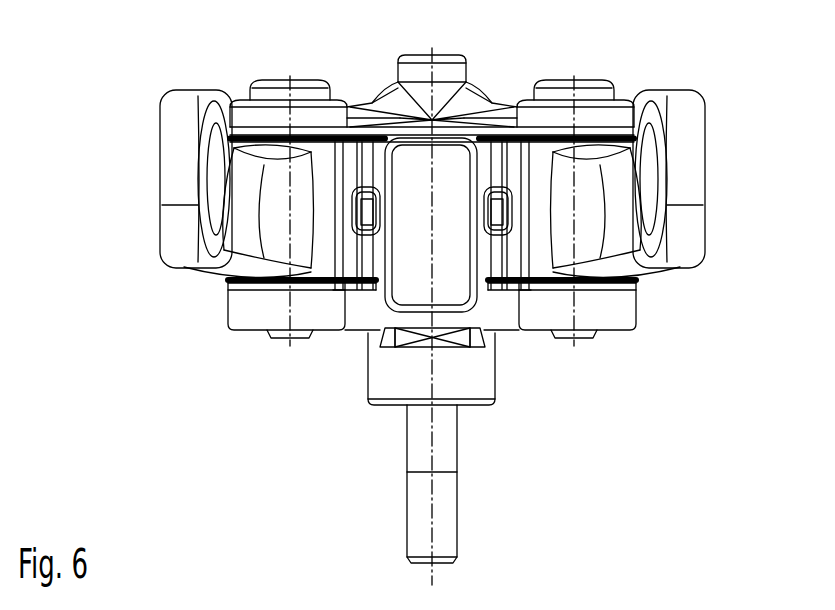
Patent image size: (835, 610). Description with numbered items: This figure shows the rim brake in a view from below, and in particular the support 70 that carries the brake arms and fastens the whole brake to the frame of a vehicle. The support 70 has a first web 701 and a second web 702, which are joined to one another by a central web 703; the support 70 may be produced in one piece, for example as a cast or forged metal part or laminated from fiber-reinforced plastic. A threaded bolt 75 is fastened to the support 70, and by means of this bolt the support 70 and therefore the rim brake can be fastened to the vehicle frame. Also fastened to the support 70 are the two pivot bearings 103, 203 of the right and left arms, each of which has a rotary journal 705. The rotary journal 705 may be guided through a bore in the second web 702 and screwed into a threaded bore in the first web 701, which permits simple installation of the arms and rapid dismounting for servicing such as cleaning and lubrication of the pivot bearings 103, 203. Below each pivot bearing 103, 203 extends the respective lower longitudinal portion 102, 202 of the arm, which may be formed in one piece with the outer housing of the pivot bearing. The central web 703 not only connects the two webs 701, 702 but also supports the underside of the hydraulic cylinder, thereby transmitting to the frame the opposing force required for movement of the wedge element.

The support 70 is at (242, 78).
The threaded bolt 75 is at (458, 517).
The lower longitudinal portion 102 is at (694, 128).
The pivot bearing 103 is at (638, 283).
The lower longitudinal portion 202 is at (182, 227).
The pivot bearing 203 is at (227, 281).
The first web 701 is at (639, 313).
The second web 702 is at (620, 119).
The central web 703 is at (417, 280).
The rotary journal 705 is at (557, 84).